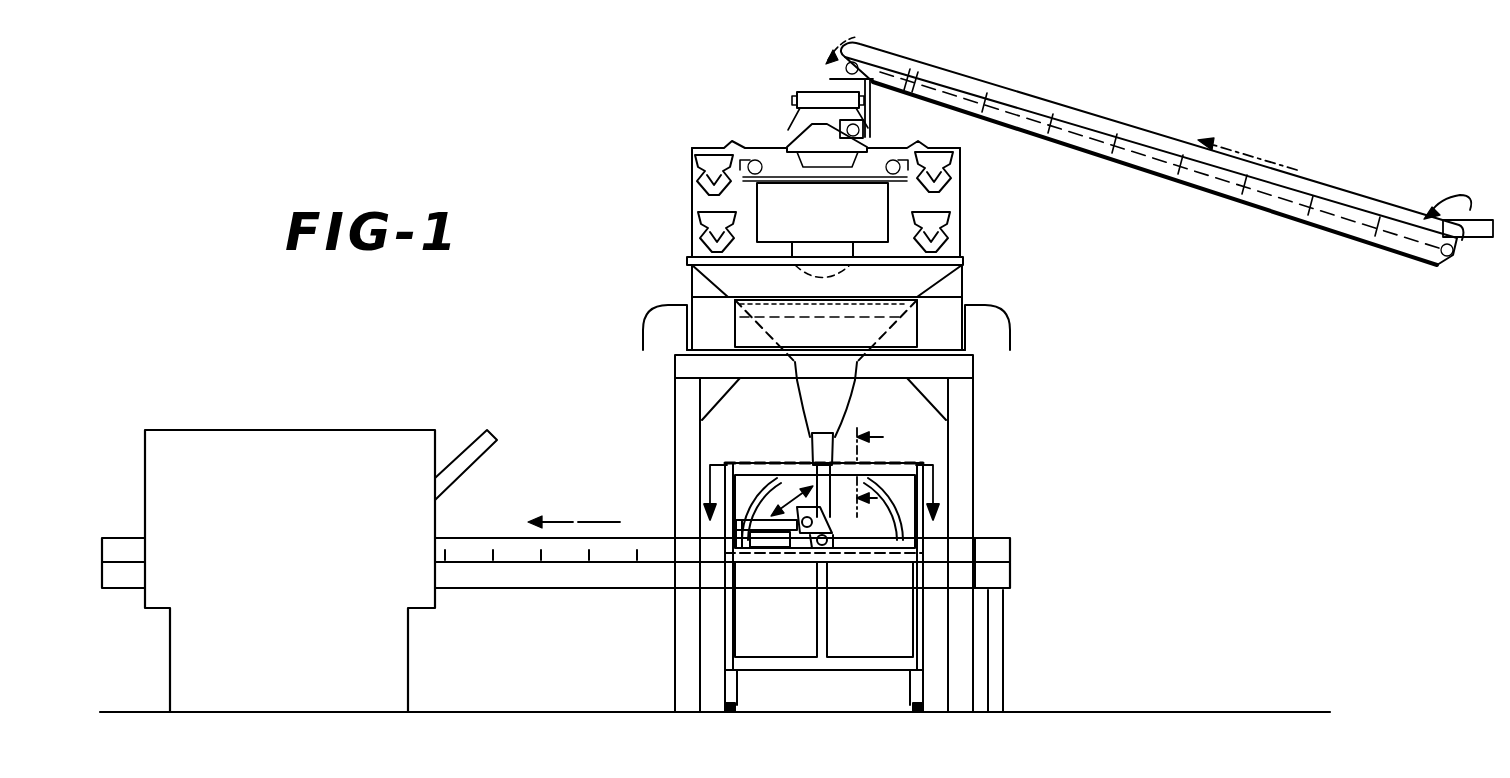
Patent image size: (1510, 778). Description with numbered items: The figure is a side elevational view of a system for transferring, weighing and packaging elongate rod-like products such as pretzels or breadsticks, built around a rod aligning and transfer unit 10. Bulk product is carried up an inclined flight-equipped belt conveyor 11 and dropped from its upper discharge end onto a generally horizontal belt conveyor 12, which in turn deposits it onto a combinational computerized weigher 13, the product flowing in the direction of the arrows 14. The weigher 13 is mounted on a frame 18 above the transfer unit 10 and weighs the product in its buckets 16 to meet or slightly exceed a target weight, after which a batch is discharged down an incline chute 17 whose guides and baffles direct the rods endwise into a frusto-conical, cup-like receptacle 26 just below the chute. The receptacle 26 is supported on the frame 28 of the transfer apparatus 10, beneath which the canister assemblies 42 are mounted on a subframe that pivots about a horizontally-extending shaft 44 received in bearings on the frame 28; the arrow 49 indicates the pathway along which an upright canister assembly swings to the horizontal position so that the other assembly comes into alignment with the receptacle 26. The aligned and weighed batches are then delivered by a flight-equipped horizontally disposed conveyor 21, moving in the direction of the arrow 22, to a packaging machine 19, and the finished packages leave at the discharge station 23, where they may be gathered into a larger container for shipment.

The rod aligning and transfer unit 10 is at (1045, 498).
The inclined flight-equipped belt conveyor 11 is at (1110, 110).
The horizontally arranged belt conveyor 12 is at (806, 85).
The combinational computerized weigher 13 is at (682, 213).
The arrows 14 is at (1260, 157).
The buckets 16 is at (718, 178).
The incline chute 17 is at (950, 290).
The frame 18 is at (975, 412).
The packaging machine 19 is at (252, 430).
The flight-equipped horizontally disposed conveyor 21 is at (565, 563).
The arrow 22 is at (575, 521).
The discharge station 23 is at (130, 590).
The cup-like receptacle 26 is at (812, 445).
The frame 28 is at (722, 630).
The canister assemblies 42 is at (822, 545).
The horizontally-extending shaft 44 is at (828, 545).
The arrow 49 is at (795, 485).